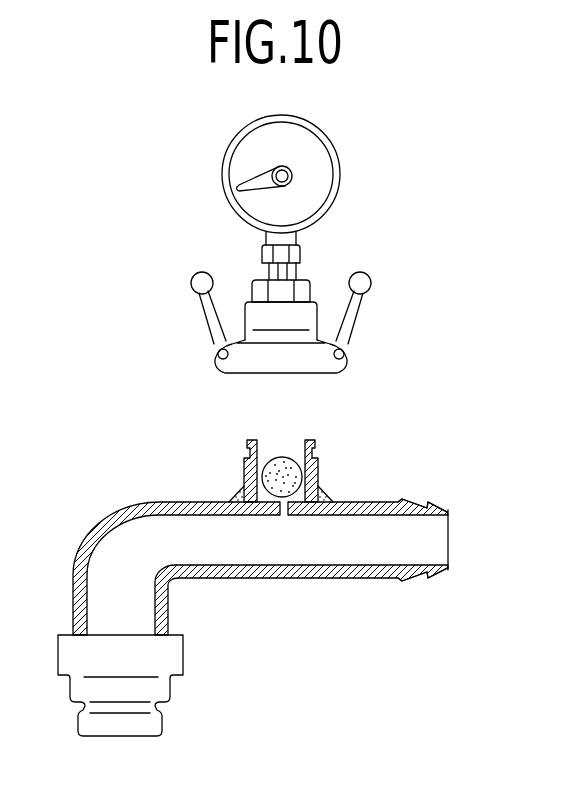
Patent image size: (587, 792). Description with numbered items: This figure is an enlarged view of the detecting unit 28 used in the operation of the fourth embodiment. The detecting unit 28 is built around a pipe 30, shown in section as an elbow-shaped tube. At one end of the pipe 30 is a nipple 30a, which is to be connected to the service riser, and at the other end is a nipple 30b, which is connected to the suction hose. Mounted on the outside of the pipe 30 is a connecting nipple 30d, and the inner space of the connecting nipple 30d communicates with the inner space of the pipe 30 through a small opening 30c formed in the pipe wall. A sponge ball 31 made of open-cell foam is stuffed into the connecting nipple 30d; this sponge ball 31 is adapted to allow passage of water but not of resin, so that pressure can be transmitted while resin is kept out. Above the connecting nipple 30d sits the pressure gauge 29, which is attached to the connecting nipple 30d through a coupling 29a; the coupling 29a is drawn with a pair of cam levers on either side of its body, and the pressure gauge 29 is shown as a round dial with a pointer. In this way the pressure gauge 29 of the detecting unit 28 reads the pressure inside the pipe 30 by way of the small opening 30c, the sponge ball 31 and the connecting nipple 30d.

The detecting unit 28 is at (384, 363).
The pressure gauge 29 is at (340, 161).
The coupling 29a is at (206, 353).
The pipe 30 is at (272, 579).
The nipple 30a is at (163, 725).
The nipple 30b is at (435, 579).
The small opening 30c is at (283, 516).
The connecting nipple 30d is at (243, 478).
The sponge ball 31 is at (283, 457).